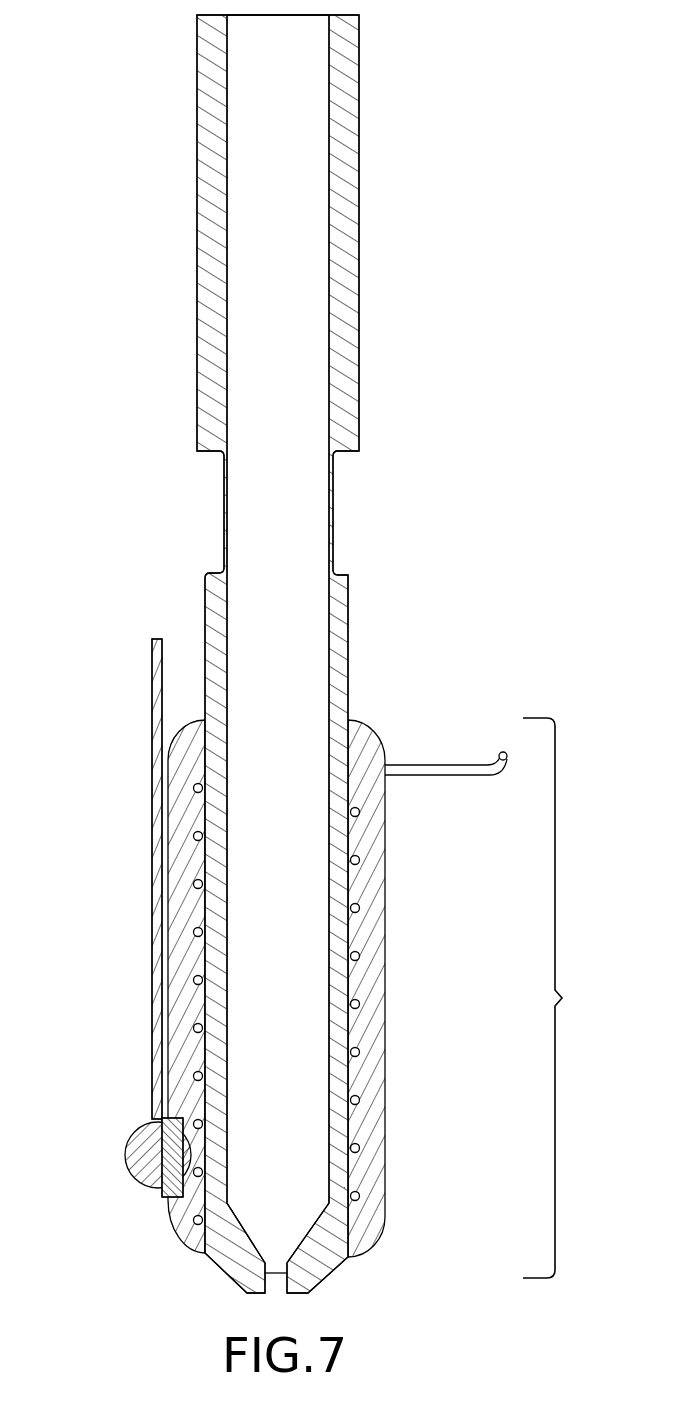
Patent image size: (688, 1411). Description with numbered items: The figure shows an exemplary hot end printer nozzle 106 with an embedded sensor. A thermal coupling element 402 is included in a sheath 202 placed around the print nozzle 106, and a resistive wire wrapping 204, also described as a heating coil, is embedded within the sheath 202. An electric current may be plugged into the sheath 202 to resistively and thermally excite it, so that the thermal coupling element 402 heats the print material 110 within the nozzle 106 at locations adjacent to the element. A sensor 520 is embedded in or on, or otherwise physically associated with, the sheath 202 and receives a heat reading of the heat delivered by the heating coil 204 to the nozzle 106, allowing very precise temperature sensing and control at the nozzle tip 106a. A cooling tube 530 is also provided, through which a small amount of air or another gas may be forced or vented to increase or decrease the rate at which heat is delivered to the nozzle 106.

The nozzle 106 is at (348, 631).
The nozzle tip 106a is at (253, 1247).
The print material 110 is at (262, 975).
The sheath 202 is at (385, 955).
The resistive wire wrapping 204 is at (358, 864).
The thermal coupling element 402 is at (569, 998).
The sensor 520 is at (125, 1151).
The cooling tube 530 is at (448, 765).